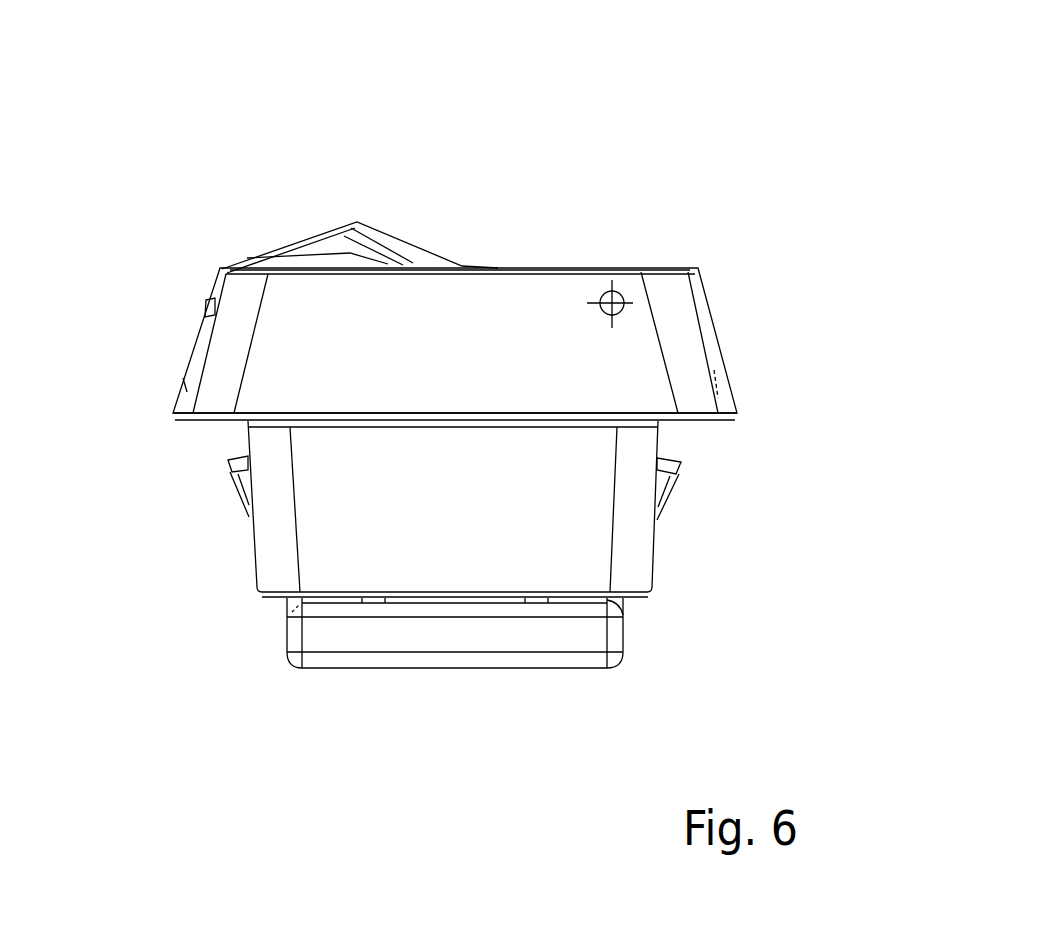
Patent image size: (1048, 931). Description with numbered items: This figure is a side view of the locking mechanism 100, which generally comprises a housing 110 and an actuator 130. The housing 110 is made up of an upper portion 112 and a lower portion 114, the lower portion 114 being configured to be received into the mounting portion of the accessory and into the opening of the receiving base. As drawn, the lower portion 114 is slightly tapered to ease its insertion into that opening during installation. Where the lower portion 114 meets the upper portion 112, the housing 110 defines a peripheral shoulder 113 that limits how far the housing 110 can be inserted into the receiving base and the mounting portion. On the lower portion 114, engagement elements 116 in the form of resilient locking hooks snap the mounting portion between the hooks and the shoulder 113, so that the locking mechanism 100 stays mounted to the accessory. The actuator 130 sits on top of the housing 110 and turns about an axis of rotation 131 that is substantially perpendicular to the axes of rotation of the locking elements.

The locking mechanism 100 is at (908, 126).
The housing 110 is at (592, 278).
The upper portion 112 is at (785, 267).
The peripheral shoulder 113 is at (248, 426).
The lower portion 114 is at (795, 604).
The engagement elements 116 is at (232, 476).
The actuator 130 is at (388, 242).
The axis of rotation 131 is at (617, 287).